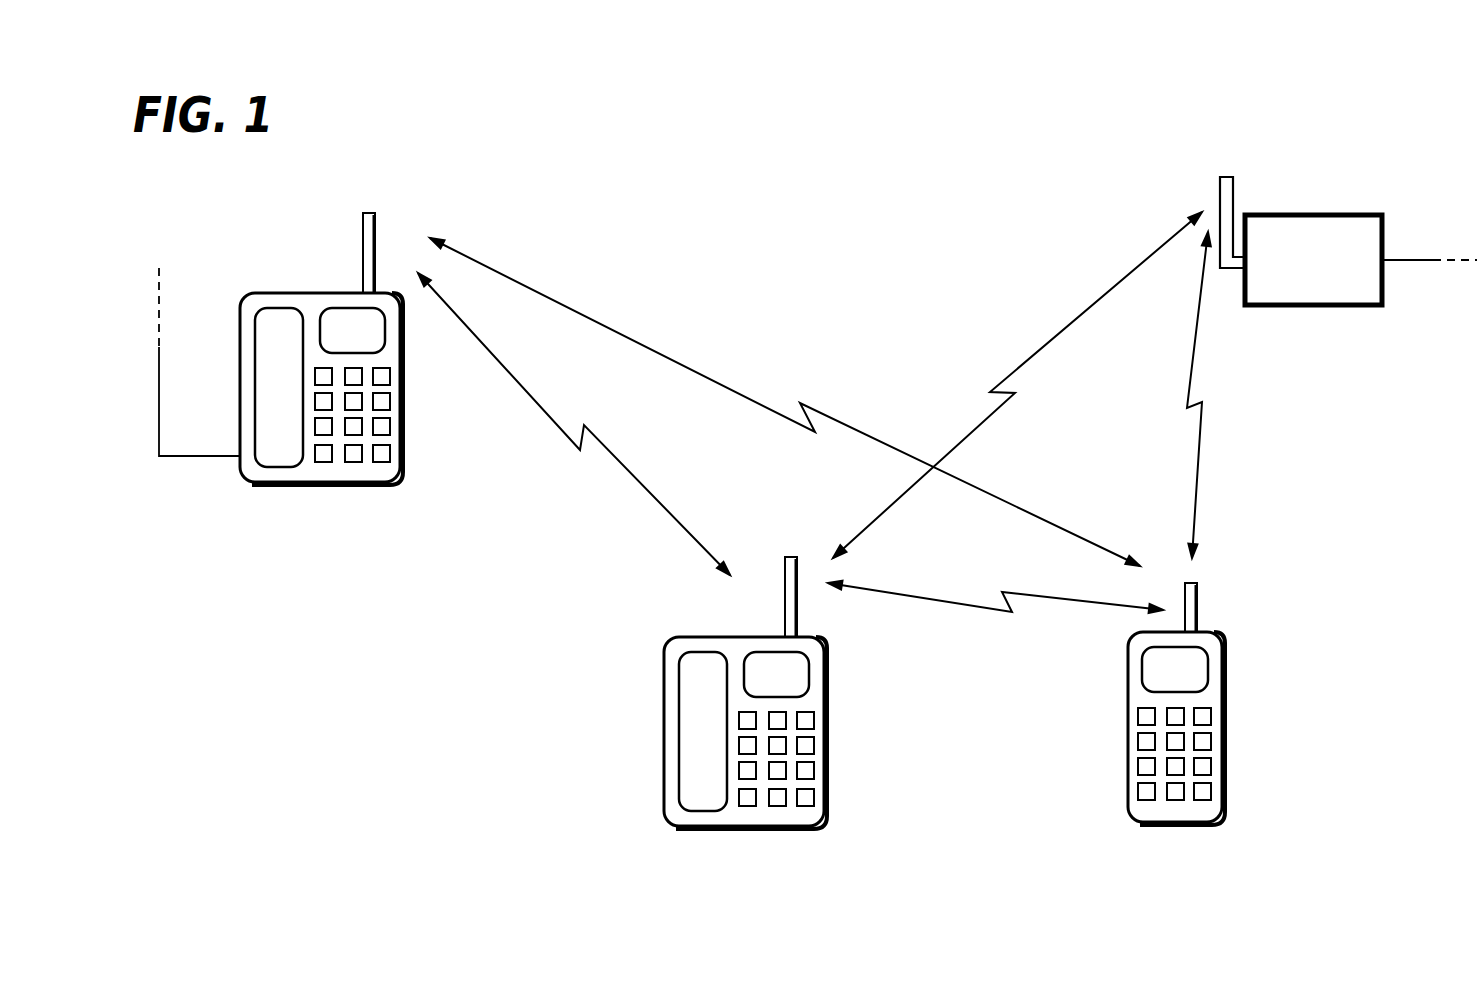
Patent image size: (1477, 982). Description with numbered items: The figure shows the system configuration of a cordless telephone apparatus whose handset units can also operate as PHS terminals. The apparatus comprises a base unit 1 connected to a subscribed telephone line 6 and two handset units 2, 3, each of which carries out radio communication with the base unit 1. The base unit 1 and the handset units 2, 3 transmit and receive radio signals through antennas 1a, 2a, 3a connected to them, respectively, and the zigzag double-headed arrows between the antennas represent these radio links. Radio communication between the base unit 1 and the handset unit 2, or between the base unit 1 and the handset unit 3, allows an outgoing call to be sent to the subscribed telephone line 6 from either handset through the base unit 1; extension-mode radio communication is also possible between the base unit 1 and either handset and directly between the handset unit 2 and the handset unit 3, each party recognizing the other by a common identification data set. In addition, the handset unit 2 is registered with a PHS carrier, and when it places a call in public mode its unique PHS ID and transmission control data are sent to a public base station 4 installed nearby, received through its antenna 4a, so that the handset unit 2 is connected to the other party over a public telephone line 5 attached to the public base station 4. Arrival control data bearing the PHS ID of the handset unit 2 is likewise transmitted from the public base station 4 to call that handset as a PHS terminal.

The base unit 1 is at (283, 485).
The antenna 1a is at (363, 250).
The handset unit 2 is at (706, 830).
The antenna 2a is at (785, 597).
The handset unit 3 is at (1192, 825).
The antenna 3a is at (1197, 607).
The public base station 4 is at (1280, 307).
The antenna 4a is at (1233, 190).
The public telephone line 5 is at (1413, 262).
The subscribed telephone line 6 is at (159, 428).